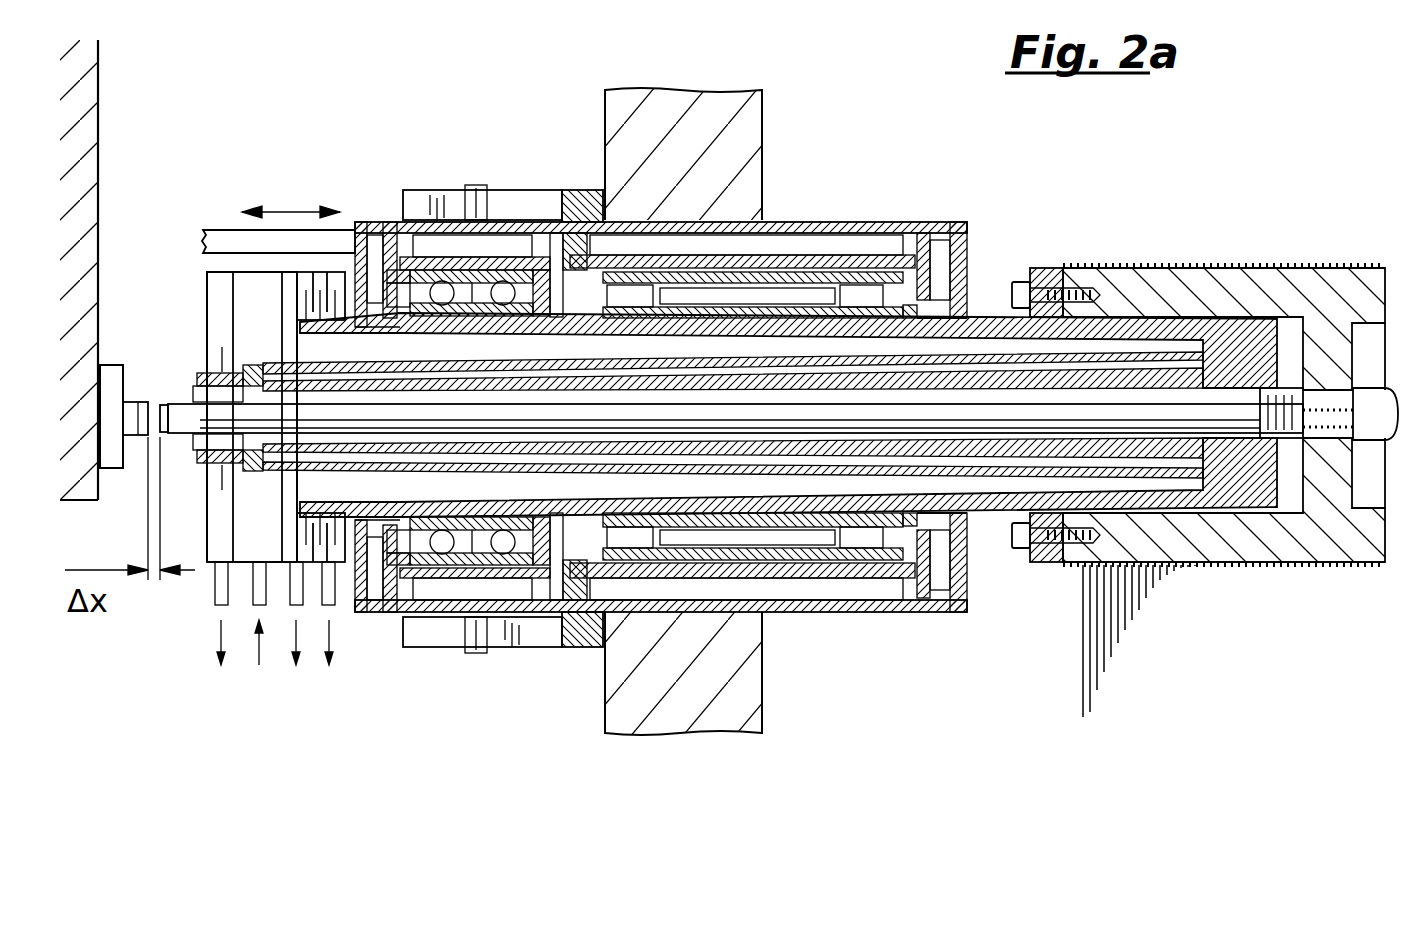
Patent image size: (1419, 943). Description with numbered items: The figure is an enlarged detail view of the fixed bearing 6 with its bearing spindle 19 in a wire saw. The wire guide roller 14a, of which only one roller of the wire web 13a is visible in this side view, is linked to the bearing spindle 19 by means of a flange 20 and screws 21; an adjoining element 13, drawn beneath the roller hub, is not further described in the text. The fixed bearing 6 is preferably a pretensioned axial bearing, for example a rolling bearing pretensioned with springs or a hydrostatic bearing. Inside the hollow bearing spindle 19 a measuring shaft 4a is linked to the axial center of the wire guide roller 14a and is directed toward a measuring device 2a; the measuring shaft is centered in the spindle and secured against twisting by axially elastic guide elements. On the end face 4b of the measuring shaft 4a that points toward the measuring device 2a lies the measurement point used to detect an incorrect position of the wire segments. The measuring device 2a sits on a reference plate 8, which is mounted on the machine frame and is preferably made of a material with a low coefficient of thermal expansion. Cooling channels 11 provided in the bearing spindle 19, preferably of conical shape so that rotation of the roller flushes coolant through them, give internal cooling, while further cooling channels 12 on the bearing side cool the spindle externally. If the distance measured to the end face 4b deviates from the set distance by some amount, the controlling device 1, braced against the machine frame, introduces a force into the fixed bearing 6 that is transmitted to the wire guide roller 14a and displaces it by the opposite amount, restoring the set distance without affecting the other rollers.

The controlling device 1 is at (228, 240).
The measuring device 2a is at (111, 376).
The measuring shaft 4a is at (190, 432).
The end face of the measuring shaft 4b is at (157, 403).
The fixed bearing 6 is at (495, 290).
The reference plate 8 is at (86, 108).
The cooling channels 11 is at (787, 488).
The further cooling channels 12 is at (855, 590).
The cooling fins 13 is at (1085, 678).
The wire web 13a is at (1220, 268).
The wire guide roller 14a is at (1252, 537).
The bearing spindle 19 is at (793, 330).
The flange 20 is at (1048, 280).
The screw 21 is at (1018, 282).